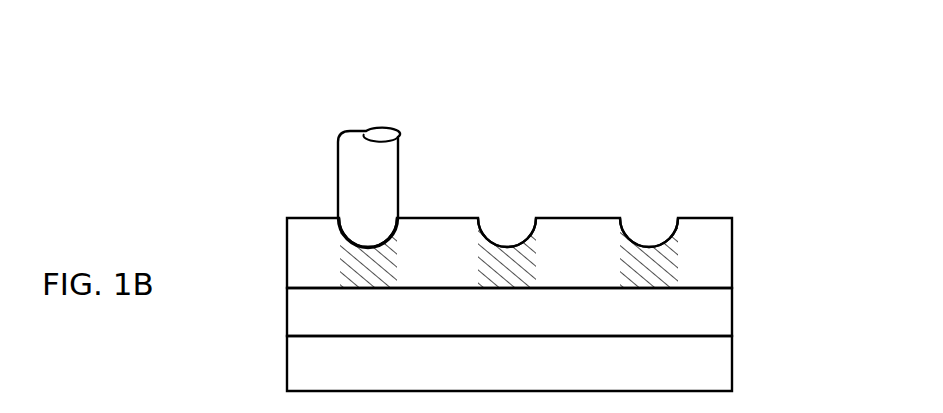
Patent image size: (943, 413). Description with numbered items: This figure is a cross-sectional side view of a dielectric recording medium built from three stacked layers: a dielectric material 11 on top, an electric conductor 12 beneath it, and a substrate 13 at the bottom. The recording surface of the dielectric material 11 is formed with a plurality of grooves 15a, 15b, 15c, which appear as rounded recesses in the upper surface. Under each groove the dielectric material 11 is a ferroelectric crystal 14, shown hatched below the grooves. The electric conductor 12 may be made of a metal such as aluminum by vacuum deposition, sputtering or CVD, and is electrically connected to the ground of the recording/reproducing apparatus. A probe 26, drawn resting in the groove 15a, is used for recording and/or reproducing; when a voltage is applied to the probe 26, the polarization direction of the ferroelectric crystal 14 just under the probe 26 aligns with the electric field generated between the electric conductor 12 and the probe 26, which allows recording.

The dielectric material 11 is at (735, 250).
The electric conductor 12 is at (735, 306).
The substrate 13 is at (738, 356).
The ferroelectric crystal 14 is at (668, 258).
The groove 15a is at (371, 242).
The groove 15b is at (508, 242).
The groove 15c is at (650, 242).
The probe 26 is at (348, 173).